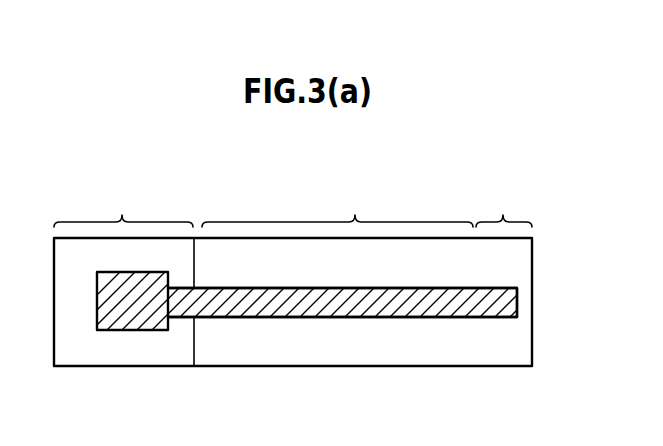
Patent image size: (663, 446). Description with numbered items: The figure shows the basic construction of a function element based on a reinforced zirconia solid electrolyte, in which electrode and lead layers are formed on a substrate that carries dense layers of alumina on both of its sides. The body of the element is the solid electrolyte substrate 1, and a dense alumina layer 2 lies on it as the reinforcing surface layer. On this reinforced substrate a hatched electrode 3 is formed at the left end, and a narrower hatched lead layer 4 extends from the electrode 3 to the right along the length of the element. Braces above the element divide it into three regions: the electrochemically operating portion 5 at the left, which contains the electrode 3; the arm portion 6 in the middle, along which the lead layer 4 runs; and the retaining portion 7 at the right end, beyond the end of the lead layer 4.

The solid electrolyte substrate 1 is at (73, 366).
The dense alumina layer 2 is at (497, 358).
The electrode 3 is at (137, 325).
The lead layer 4 is at (358, 308).
The electrochemically operating portion 5 is at (123, 202).
The arm portion 6 is at (337, 202).
The retaining portion 7 is at (504, 202).